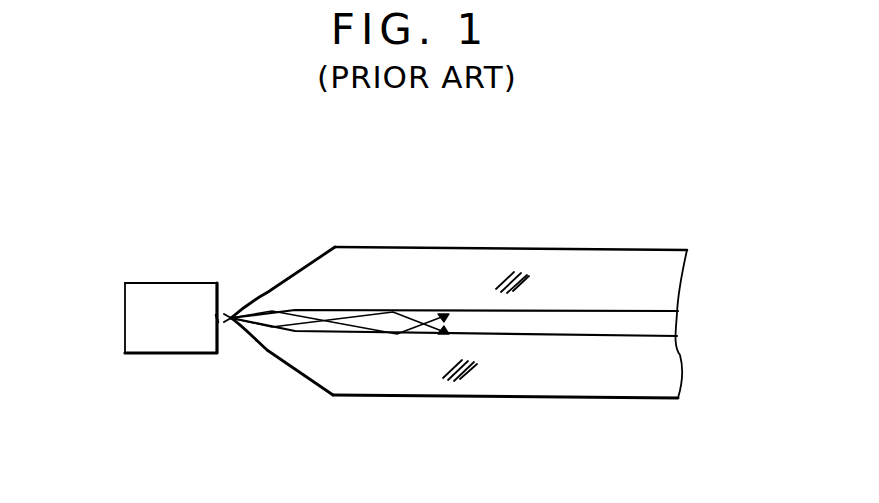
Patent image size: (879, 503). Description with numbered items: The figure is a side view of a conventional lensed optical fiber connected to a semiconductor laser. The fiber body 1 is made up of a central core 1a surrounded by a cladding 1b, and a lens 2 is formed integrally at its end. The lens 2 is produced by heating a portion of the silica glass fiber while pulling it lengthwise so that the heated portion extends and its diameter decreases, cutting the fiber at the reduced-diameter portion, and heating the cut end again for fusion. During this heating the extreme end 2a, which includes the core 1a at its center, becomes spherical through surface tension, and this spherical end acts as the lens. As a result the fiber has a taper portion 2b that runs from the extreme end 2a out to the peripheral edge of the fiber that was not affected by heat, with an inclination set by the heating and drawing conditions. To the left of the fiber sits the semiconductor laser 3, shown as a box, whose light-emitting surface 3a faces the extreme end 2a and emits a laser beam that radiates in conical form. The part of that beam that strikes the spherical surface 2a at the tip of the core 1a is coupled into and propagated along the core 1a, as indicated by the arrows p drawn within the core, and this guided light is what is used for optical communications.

The fiber body 1 is at (758, 187).
The core 1a is at (655, 322).
The cladding 1b is at (665, 261).
The lens 2 is at (278, 241).
The extreme end 2a is at (229, 310).
The taper portion 2b is at (302, 263).
The semiconductor laser 3 is at (158, 355).
The light-emitting surface 3a is at (213, 321).
The arrows p is at (350, 323).